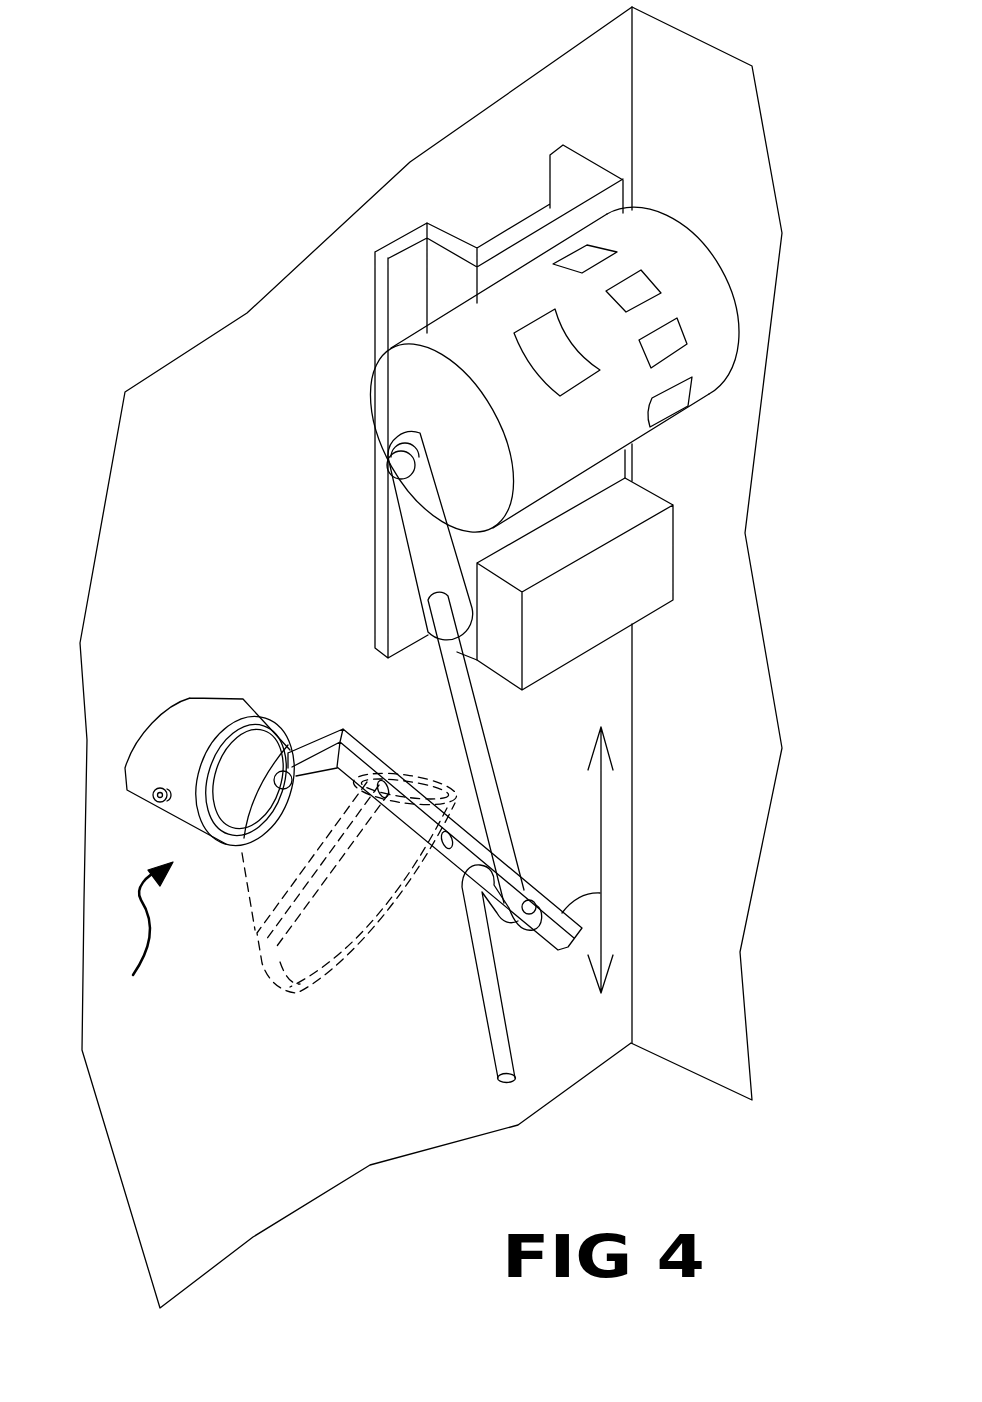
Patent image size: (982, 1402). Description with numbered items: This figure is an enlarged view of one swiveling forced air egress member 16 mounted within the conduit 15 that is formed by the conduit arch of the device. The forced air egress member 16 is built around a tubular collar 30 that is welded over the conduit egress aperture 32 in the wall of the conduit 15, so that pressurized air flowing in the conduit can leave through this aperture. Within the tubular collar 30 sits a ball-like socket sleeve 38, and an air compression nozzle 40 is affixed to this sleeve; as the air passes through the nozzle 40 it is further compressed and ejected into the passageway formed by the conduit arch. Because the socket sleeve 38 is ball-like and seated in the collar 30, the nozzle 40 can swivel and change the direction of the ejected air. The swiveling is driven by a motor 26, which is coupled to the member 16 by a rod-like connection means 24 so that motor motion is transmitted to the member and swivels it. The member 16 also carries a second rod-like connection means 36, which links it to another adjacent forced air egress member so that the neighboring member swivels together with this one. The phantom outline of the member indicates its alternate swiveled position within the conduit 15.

The conduit 15 is at (718, 585).
The swiveling forced air egress member 16 is at (134, 936).
The rod-like connection means 24 is at (478, 772).
The motor 26 is at (661, 247).
The tubular collar 30 is at (220, 708).
The conduit egress aperture 32 is at (165, 713).
The second rod-like connection means 36 is at (502, 1045).
The ball-like socket sleeve 38 is at (253, 738).
The air compression nozzle 40 is at (260, 935).